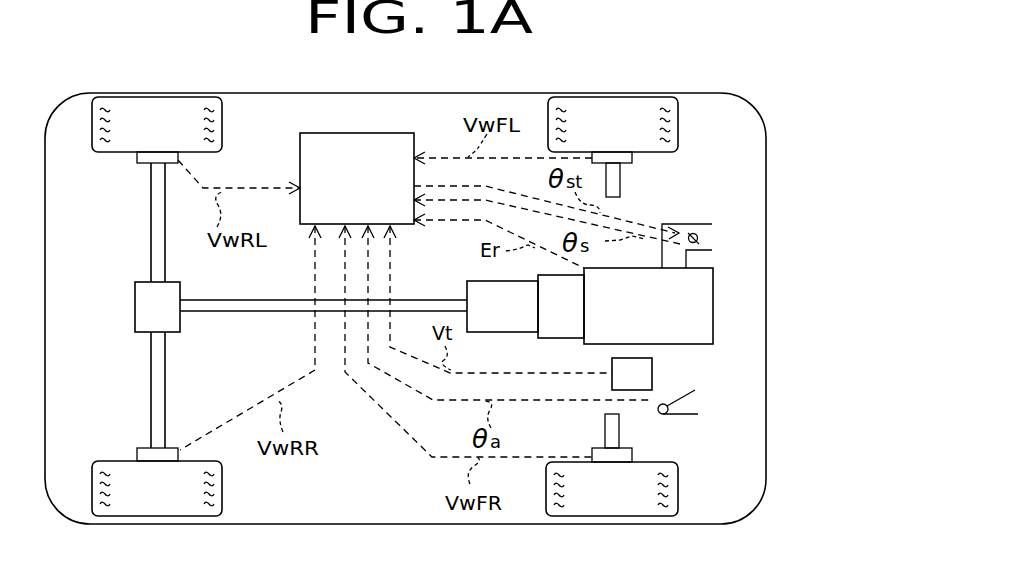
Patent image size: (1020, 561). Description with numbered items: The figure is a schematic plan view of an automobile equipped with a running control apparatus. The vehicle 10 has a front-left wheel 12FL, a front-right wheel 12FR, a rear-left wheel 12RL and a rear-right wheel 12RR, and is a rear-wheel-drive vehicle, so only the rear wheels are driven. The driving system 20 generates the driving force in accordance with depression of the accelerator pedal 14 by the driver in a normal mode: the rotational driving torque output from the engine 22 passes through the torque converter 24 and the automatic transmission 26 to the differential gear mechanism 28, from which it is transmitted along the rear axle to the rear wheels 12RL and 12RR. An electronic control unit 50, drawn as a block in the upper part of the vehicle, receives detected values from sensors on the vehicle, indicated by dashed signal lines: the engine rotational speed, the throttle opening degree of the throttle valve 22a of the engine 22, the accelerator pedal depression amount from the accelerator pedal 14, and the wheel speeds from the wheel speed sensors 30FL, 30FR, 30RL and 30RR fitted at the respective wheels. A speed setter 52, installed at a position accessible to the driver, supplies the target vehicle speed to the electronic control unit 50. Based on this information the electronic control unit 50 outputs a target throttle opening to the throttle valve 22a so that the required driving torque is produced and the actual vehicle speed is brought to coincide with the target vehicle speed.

The vehicle 10 is at (772, 335).
The rear-left wheel 12RL is at (157, 124).
The rear-right wheel 12RR is at (157, 488).
The front-left wheel 12FL is at (613, 124).
The front-right wheel 12FR is at (612, 489).
The accelerator pedal 14 is at (701, 403).
The driving system 20 is at (694, 276).
The engine 22 is at (662, 319).
The throttle valve 22a is at (700, 240).
The torque converter 24 is at (548, 319).
The automatic transmission 26 is at (515, 319).
The differential gear mechanism 28 is at (145, 319).
The rear-left wheel speed sensor 30RL is at (140, 155).
The rear-right wheel speed sensor 30RR is at (140, 458).
The front-left wheel speed sensor 30FL is at (634, 156).
The front-right wheel speed sensor 30FR is at (633, 456).
The electronic control unit 50 is at (343, 194).
The speed setter 52 is at (621, 384).